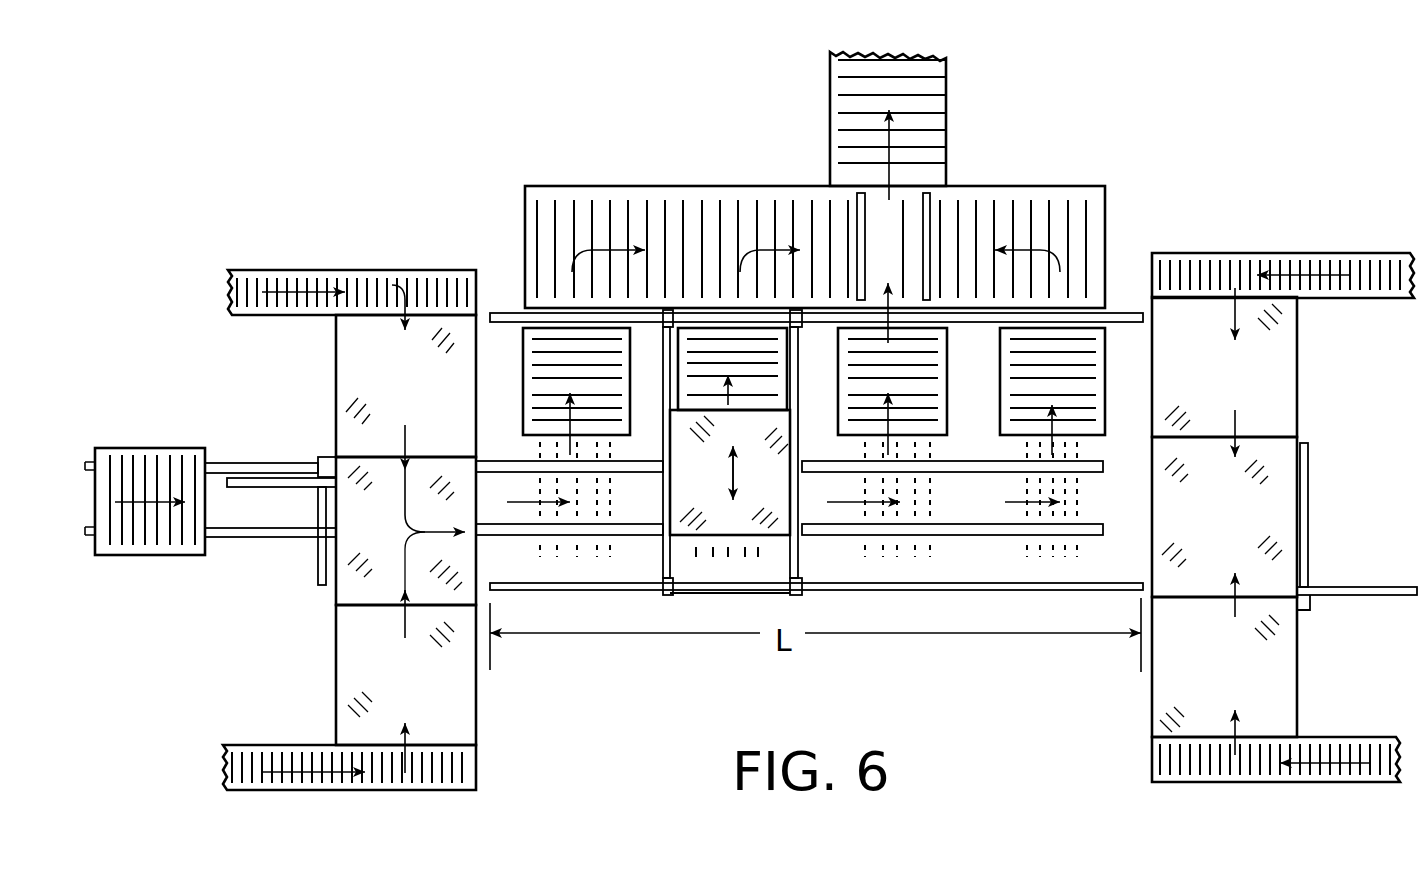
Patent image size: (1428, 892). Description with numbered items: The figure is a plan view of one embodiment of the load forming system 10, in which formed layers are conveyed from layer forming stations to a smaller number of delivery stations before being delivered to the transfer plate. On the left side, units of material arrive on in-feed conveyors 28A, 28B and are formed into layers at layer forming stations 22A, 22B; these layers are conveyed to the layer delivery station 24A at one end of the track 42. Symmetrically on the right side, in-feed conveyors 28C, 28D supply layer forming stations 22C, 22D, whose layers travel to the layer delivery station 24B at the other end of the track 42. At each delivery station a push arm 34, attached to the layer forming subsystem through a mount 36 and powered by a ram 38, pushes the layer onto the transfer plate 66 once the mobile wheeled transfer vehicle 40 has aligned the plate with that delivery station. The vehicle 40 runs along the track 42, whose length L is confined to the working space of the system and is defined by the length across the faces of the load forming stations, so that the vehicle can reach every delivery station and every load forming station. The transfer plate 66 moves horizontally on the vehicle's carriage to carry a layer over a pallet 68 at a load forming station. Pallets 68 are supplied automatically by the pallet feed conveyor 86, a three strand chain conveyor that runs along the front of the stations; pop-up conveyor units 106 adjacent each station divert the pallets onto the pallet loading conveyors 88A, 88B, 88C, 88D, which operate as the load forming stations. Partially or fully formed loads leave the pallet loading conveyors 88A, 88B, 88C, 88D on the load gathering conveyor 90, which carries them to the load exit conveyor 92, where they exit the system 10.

The load forming system 10 is at (1060, 62).
The layer forming station 22A is at (406, 681).
The layer forming station 22B is at (406, 392).
The layer forming station 22C is at (1224, 676).
The layer forming station 22D is at (1224, 372).
The layer delivery station 24A is at (406, 531).
The layer delivery station 24B is at (1224, 527).
The in-feed conveyor 28A is at (242, 745).
The in-feed conveyor 28B is at (262, 270).
The in-feed conveyor 28C is at (1322, 737).
The in-feed conveyor 28D is at (1228, 253).
The push arm 34 is at (318, 551).
The mount 36 is at (333, 457).
The ram 38 is at (292, 478).
The mobile wheeled transfer vehicle 40 is at (806, 560).
The track 42 is at (510, 312).
The transfer plate 66 is at (730, 472).
The pallet 68 is at (948, 407).
The pallet feed conveyor 86 is at (237, 462).
The pallet loading conveyor 88A is at (522, 348).
The pallet loading conveyor 88B is at (720, 335).
The pallet loading conveyor 88C is at (948, 334).
The pallet loading conveyor 88D is at (1105, 400).
The load gathering conveyor 90 is at (1030, 186).
The load exit conveyor 92 is at (955, 100).
The pop-up conveyor units 106 is at (612, 518).